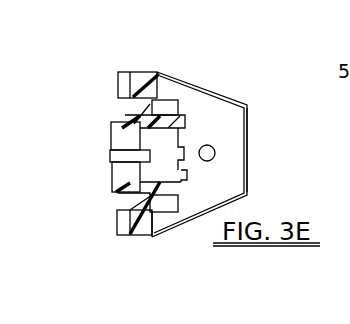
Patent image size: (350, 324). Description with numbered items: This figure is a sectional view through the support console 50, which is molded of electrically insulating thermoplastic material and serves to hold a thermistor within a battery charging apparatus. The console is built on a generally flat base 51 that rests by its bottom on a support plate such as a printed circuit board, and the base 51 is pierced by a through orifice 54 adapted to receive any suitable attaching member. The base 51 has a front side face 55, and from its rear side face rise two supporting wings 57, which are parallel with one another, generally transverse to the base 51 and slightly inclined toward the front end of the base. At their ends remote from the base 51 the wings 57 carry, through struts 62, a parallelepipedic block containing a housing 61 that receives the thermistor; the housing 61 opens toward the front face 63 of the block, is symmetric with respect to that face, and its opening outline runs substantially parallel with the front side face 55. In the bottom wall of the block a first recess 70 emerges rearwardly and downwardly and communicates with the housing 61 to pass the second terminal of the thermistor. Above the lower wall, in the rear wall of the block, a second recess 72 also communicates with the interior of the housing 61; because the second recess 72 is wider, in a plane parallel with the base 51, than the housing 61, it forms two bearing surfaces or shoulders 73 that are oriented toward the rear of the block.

The support console 50 is at (247, 99).
The base 51 is at (213, 123).
The through orifice 54 is at (208, 155).
The front side face 55 is at (249, 167).
The supporting wings 57 is at (140, 80).
The housing 61 is at (183, 141).
The struts 62 is at (137, 106).
The front face 63 is at (190, 185).
The first recess 70 is at (115, 155).
The second recess 72 is at (118, 135).
The bearing surfaces or shoulders 73 is at (126, 126).